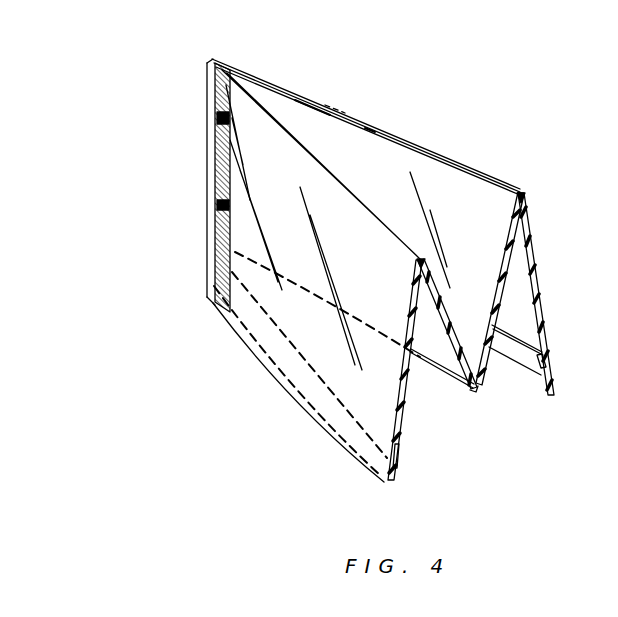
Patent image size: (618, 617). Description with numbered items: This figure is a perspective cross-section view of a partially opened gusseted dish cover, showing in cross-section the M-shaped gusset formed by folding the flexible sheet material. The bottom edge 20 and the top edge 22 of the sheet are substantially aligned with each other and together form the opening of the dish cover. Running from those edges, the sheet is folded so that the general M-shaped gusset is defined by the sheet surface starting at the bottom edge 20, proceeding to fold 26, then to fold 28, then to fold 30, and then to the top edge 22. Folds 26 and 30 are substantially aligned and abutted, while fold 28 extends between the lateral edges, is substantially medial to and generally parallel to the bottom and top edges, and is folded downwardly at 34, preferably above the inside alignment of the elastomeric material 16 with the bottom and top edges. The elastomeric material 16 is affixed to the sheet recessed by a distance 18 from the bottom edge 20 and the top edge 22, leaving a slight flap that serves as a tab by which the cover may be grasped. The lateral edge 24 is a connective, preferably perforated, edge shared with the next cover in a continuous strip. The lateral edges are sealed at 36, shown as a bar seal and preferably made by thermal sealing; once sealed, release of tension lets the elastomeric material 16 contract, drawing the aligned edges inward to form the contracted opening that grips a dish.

The elastomeric material 16 is at (399, 453).
The distance 18 is at (307, 407).
The bottom edge 20 is at (327, 442).
The top edge 22 is at (507, 370).
The lateral edge 24 is at (207, 82).
The fold 26 is at (365, 226).
The fold 28 is at (477, 388).
The fold 30 is at (460, 162).
The downward fold location 34 is at (296, 285).
The bar seal 36 is at (221, 118).